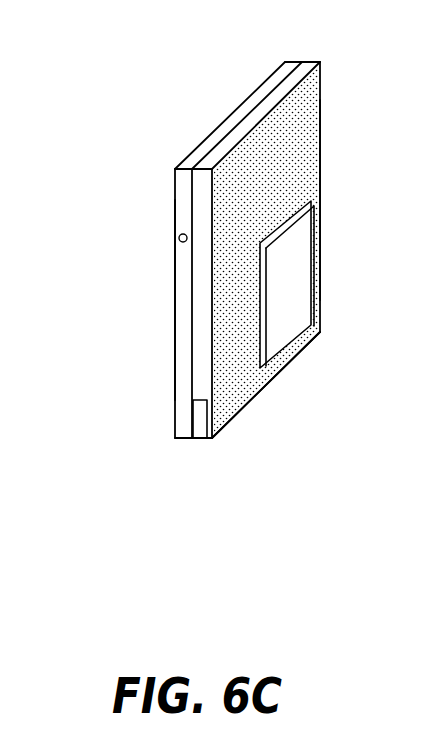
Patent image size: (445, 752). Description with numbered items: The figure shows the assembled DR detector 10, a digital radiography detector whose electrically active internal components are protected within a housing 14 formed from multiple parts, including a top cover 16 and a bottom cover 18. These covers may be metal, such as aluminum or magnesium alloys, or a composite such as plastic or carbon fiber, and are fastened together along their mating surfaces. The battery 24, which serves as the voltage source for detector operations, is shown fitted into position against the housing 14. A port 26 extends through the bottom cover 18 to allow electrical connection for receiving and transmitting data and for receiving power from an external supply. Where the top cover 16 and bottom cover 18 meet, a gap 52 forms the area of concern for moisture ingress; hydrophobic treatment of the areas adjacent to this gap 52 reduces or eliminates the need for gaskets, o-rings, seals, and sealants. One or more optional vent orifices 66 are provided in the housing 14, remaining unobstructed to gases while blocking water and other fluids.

The DR detector 10 is at (112, 137).
The housing 14 is at (333, 100).
The top cover 16 is at (177, 243).
The bottom cover 18 is at (320, 142).
The battery 24 is at (293, 312).
The port 26 is at (211, 439).
The gap 52 is at (188, 383).
The vent orifices 66 is at (179, 235).